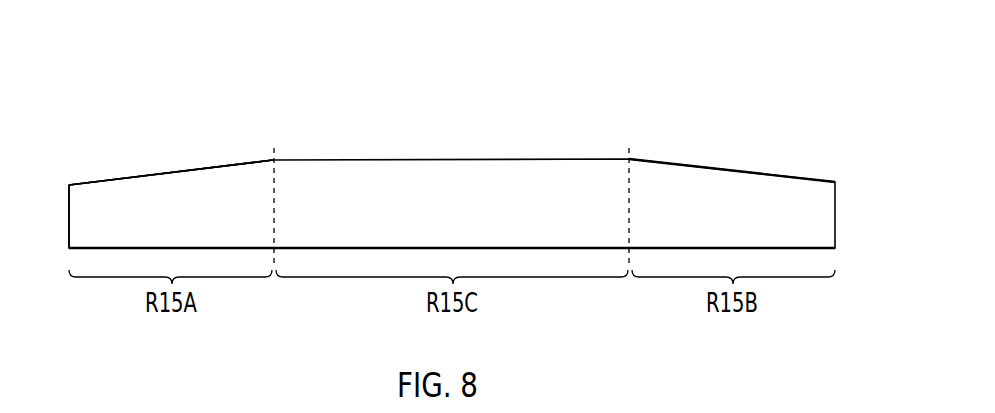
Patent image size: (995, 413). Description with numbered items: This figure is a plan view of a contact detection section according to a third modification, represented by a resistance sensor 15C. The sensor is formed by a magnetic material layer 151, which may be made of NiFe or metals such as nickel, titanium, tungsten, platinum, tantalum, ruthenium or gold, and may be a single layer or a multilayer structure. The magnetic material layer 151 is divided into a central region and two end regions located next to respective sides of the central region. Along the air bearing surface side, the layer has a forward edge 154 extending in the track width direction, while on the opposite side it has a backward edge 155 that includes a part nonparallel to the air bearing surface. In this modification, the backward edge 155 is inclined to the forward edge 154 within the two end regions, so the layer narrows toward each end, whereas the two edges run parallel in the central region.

The resistance sensor 15C is at (641, 96).
The magnetic material layer 151 is at (171, 183).
The backward edge 155 is at (230, 163).
The forward edge 154 is at (567, 248).